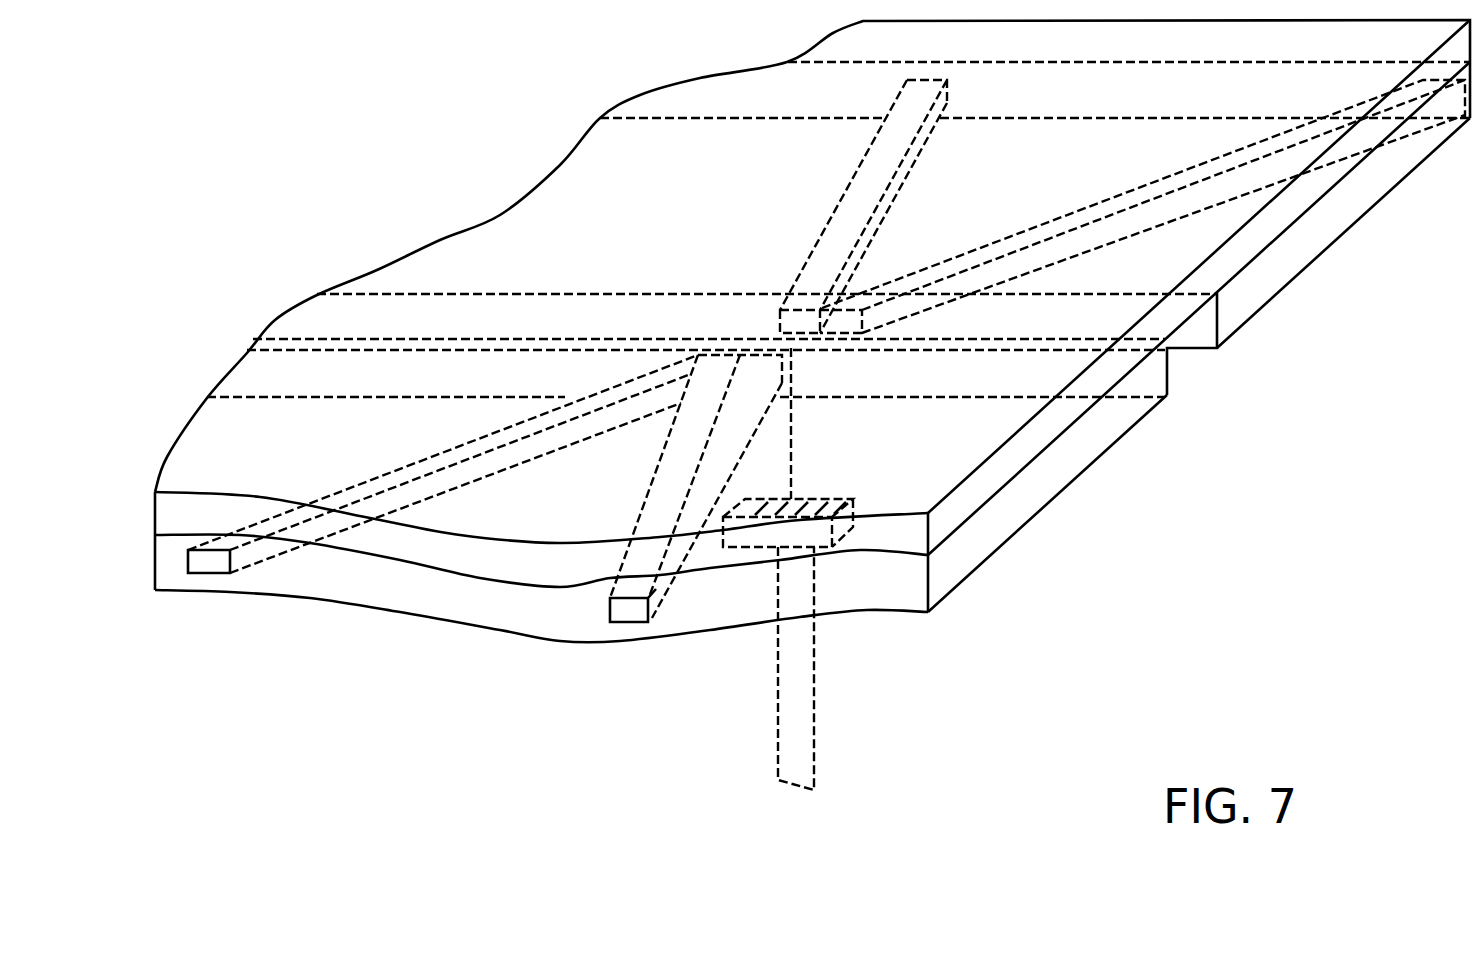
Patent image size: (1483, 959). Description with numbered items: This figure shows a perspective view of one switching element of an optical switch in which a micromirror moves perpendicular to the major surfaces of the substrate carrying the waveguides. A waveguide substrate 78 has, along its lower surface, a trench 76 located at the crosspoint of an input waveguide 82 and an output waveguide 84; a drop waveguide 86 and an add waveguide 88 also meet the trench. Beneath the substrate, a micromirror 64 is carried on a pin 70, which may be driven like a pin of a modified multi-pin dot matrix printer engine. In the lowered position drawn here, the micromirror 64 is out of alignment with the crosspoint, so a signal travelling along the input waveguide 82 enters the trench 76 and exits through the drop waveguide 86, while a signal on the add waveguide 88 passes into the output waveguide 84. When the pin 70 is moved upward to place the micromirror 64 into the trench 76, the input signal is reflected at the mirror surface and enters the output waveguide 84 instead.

The micromirror 64 is at (837, 500).
The pin 70 is at (805, 718).
The trench 76 is at (1177, 348).
The waveguide substrate 78 is at (960, 510).
The input waveguide 82 is at (393, 478).
The output waveguide 84 is at (682, 495).
The drop waveguide 86 is at (1130, 197).
The add waveguide 88 is at (853, 193).